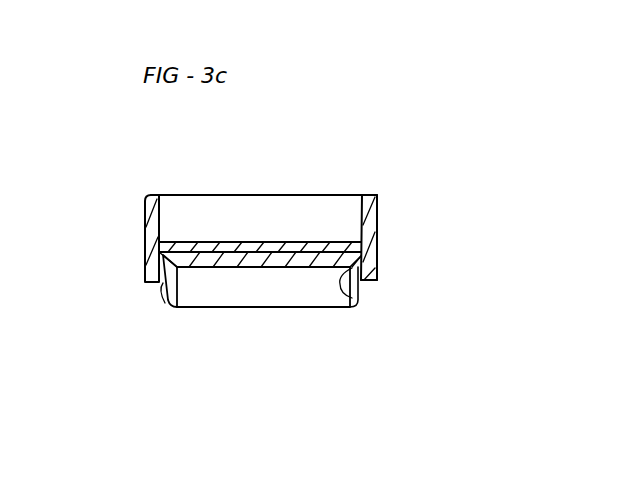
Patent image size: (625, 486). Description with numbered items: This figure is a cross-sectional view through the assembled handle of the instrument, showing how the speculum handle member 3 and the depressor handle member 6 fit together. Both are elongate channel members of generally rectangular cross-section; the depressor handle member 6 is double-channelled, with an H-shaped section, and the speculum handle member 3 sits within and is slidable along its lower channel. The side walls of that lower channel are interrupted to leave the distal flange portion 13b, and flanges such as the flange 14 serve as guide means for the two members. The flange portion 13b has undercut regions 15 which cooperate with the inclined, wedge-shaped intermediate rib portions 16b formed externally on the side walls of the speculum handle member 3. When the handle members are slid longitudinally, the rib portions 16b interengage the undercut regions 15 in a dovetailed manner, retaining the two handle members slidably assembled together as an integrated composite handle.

The speculum handle member 3 is at (300, 288).
The depressor handle member 6 is at (237, 213).
The distal flange portion 13b is at (378, 276).
The flange 14 is at (162, 291).
The undercut region 15 is at (162, 268).
The intermediate rib portion 16b is at (163, 284).